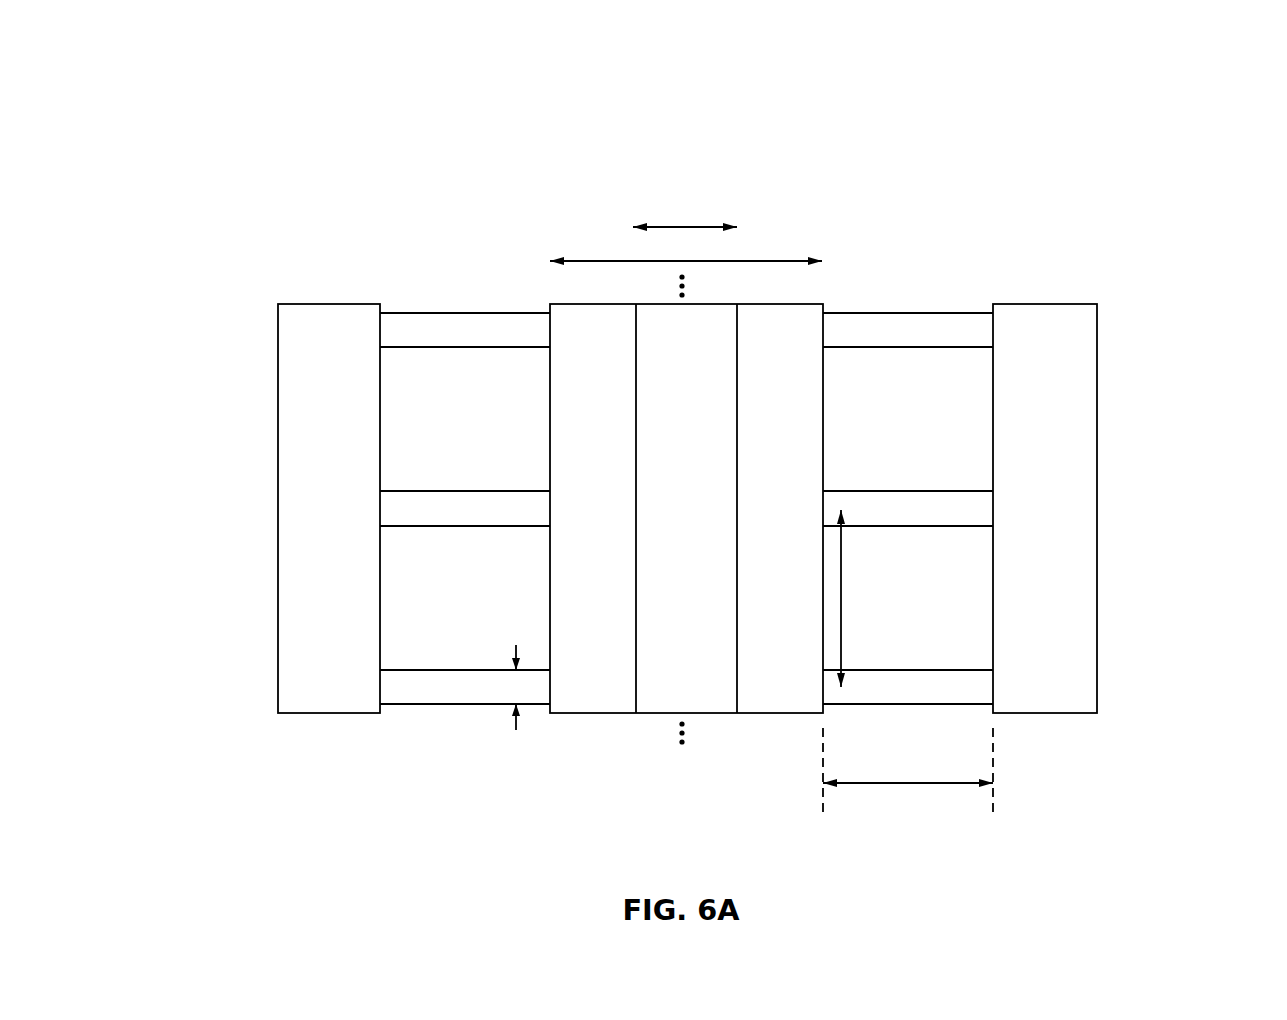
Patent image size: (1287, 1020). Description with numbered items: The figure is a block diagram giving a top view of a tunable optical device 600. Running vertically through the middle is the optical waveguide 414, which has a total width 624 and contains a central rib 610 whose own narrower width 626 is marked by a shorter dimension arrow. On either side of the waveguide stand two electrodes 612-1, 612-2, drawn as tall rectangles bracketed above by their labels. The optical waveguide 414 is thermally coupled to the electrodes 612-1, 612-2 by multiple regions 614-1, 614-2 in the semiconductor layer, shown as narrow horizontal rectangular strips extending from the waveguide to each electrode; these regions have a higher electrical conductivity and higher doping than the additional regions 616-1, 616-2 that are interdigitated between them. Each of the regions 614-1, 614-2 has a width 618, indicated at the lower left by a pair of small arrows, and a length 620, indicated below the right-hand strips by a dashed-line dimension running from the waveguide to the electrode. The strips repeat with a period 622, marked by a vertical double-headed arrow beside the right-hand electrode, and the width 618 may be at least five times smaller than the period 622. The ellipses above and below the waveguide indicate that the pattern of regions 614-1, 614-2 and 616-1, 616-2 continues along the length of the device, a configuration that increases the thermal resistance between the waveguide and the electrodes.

The tunable optical device 600 is at (1057, 98).
The optical waveguide 414 is at (546, 747).
The central rib 610 is at (737, 135).
The electrode 612-1 is at (991, 270).
The electrode 612-2 is at (274, 270).
The regions 614-1 is at (959, 329).
The regions 614-2 is at (426, 329).
The additional regions 616-1 is at (942, 432).
The additional regions 616-2 is at (432, 431).
The width 618 is at (517, 688).
The length 620 is at (908, 783).
The period 622 is at (842, 628).
The total width 624 is at (600, 260).
The width 626 is at (687, 227).